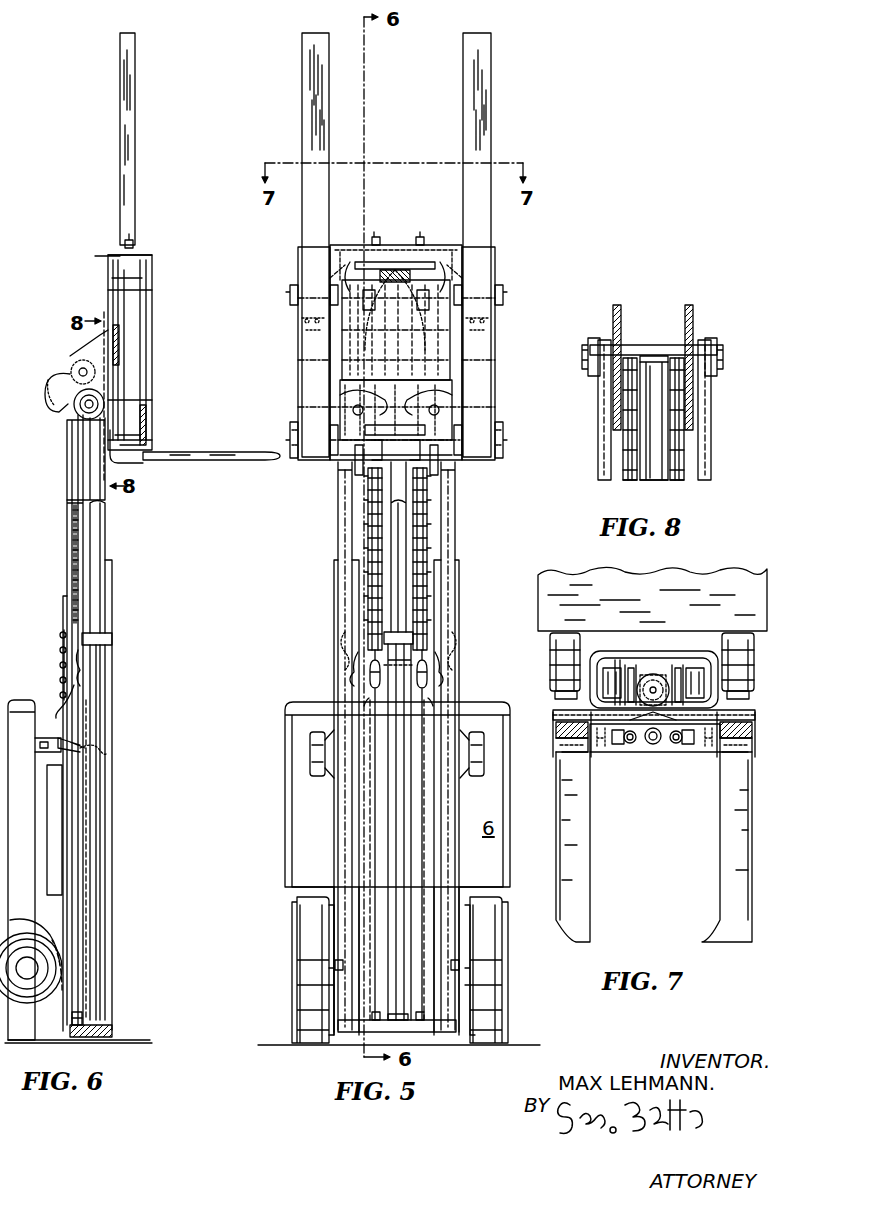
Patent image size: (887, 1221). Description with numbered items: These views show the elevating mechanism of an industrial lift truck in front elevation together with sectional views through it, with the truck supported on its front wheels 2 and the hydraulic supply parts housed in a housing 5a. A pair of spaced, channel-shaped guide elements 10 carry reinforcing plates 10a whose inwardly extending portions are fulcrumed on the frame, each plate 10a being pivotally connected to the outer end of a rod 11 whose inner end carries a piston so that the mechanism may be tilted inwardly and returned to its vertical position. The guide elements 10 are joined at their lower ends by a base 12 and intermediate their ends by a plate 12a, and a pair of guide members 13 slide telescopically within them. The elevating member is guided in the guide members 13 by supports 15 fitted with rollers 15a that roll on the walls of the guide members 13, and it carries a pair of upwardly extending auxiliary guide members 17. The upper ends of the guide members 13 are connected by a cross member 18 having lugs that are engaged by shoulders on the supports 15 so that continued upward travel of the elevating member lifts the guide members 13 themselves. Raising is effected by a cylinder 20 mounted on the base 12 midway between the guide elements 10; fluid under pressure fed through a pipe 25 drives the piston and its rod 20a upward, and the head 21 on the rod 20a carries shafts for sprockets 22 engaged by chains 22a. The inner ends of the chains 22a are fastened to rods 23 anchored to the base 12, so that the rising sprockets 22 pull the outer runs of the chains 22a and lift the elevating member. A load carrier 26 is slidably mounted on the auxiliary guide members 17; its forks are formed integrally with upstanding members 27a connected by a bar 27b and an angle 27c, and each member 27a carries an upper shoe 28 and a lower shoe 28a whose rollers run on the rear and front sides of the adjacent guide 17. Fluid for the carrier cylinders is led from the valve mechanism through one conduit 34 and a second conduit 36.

In FIG. 6, the front pair of wheels 2 is at (35, 1040).
In FIG. 5, the front pair of wheels 2 is at (297, 1036).
In FIG. 7, the front pair of wheels 2 is at (557, 658).
In FIG. 6, the housing 5a is at (22, 706).
In FIG. 5, the housing 5a is at (292, 788).
In FIG. 7, the housing 5a is at (722, 578).
In FIG. 6, the guide elements 10 is at (112, 800).
In FIG. 5, the guide elements 10 is at (335, 590).
In FIG. 6, the reinforcing plates 10a is at (50, 795).
In FIG. 5, the reinforcing plates 10a is at (479, 856).
In FIG. 6, the rod 11 is at (42, 752).
In FIG. 5, the rod 11 is at (310, 748).
In FIG. 6, the base 12 is at (113, 1033).
In FIG. 5, the base 12 is at (438, 1032).
In FIG. 6, the plate 12a is at (60, 665).
In FIG. 5, the plate 12a is at (356, 684).
In FIG. 6, the guide members 13 is at (66, 548).
In FIG. 5, the guide members 13 is at (340, 540).
In FIG. 8, the guide members 13 is at (712, 460).
In FIG. 7, the supports 15 is at (596, 712).
In FIG. 7, the rollers 15a is at (614, 660).
In FIG. 5, the auxiliary guide members 17 is at (306, 214).
In FIG. 6, the cross member 18 is at (45, 395).
In FIG. 8, the cross member 18 is at (722, 357).
In FIG. 7, the cross member 18 is at (650, 652).
In FIG. 6, the cylinder 20 is at (92, 866).
In FIG. 5, the cylinder 20 is at (396, 872).
In FIG. 6, the rod 20a is at (96, 600).
In FIG. 5, the rod 20a is at (396, 512).
In FIG. 8, the rod 20a is at (666, 482).
In FIG. 8, the head 21 is at (658, 362).
In FIG. 7, the head 21 is at (655, 672).
In FIG. 6, the sprockets 22 is at (72, 368).
In FIG. 8, the sprockets 22 is at (632, 360).
In FIG. 6, the chains 22a is at (72, 520).
In FIG. 5, the chains 22a is at (425, 513).
In FIG. 8, the chains 22a is at (634, 480).
In FIG. 6, the rods 23 is at (88, 908).
In FIG. 5, the rods 23 is at (370, 817).
In FIG. 6, the pipe 25 is at (78, 1037).
In FIG. 6, the load carrier 26 is at (185, 435).
In FIG. 5, the load carrier 26 is at (531, 382).
In FIG. 7, the load carrier 26 is at (622, 862).
In FIG. 6, the upstanding members 27a is at (238, 440).
In FIG. 5, the upstanding members 27a is at (310, 255).
In FIG. 7, the upstanding members 27a is at (754, 730).
In FIG. 5, the bar 27b is at (458, 371).
In FIG. 6, the angle 27c is at (140, 262).
In FIG. 5, the angle 27c is at (338, 250).
In FIG. 7, the angle 27c is at (700, 752).
In FIG. 5, the upper shoes 28 is at (498, 290).
In FIG. 7, the upper shoes 28 is at (752, 738).
In FIG. 5, the lower shoes 28a is at (498, 430).
In FIG. 6, the conduit 34 is at (75, 719).
In FIG. 5, the conduit 34 is at (372, 696).
In FIG. 5, the conduit 36 is at (426, 696).